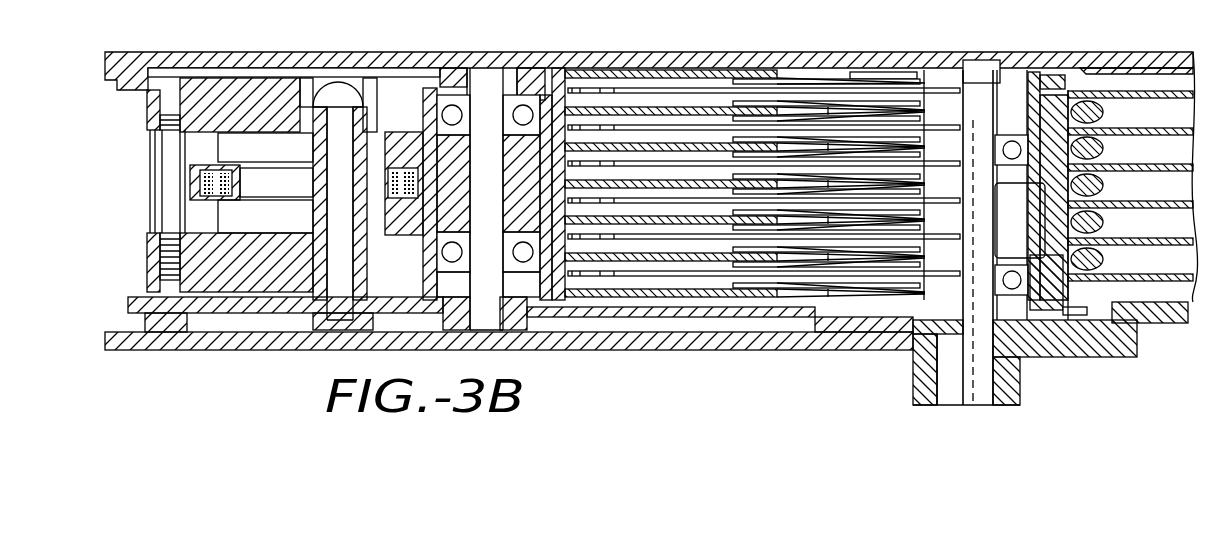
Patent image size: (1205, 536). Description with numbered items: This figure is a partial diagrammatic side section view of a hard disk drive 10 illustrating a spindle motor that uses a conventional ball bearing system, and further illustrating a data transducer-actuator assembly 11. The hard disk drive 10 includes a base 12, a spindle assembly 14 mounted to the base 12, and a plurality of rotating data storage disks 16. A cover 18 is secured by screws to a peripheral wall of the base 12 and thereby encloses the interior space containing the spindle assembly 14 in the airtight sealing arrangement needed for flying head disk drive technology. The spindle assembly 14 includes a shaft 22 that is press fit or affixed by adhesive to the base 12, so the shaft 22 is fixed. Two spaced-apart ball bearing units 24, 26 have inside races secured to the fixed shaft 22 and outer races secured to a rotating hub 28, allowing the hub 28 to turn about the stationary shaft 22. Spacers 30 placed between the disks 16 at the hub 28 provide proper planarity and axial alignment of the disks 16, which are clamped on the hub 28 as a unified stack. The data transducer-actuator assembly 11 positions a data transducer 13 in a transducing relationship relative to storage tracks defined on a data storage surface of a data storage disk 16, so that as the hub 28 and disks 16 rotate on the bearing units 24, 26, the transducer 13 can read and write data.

The hard disk drive 10 is at (642, 42).
The data transducer-actuator assembly 11 is at (560, 70).
The base 12 is at (1099, 340).
The data transducer 13 is at (930, 83).
The spindle assembly 14 is at (982, 50).
The rotating data storage disks 16 is at (685, 166).
The cover 18 is at (870, 52).
The shaft 22 is at (958, 383).
The ball bearing unit 24 is at (1032, 312).
The ball bearing unit 26 is at (1024, 135).
The rotating hub 28 is at (1054, 140).
The spacers 30 is at (1107, 112).